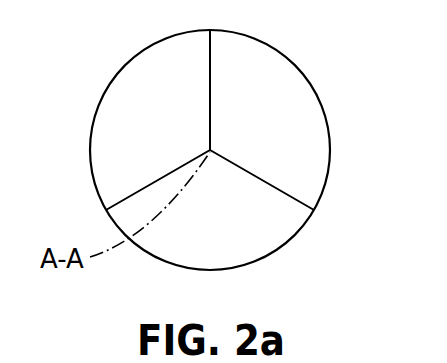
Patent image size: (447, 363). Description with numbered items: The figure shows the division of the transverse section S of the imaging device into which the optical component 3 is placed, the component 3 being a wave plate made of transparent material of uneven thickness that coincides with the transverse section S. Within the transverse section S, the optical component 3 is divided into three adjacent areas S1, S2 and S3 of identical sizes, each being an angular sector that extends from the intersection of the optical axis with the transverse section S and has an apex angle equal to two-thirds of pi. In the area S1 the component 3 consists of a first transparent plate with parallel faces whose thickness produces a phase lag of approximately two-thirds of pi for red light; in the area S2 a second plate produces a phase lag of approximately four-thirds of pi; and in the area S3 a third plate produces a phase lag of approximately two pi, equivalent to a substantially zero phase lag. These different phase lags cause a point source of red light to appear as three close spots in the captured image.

The transverse section S is at (318, 85).
The optical component 3 is at (330, 132).
The first area S1 is at (146, 123).
The second area S2 is at (268, 123).
The third area S3 is at (209, 216).